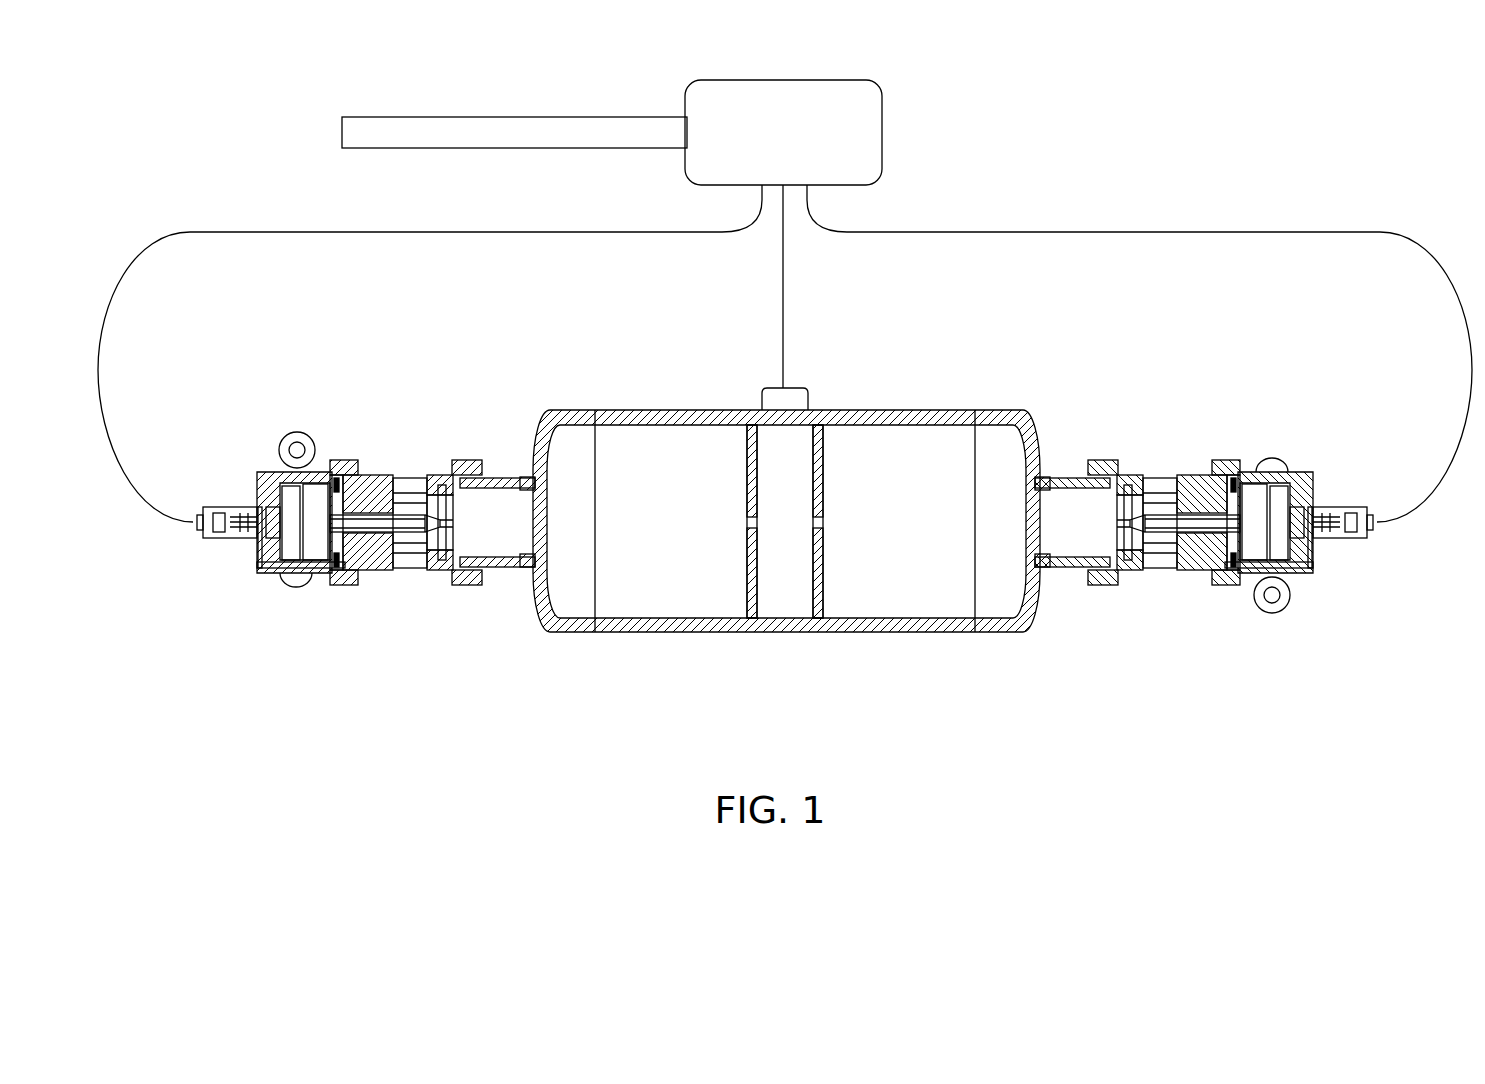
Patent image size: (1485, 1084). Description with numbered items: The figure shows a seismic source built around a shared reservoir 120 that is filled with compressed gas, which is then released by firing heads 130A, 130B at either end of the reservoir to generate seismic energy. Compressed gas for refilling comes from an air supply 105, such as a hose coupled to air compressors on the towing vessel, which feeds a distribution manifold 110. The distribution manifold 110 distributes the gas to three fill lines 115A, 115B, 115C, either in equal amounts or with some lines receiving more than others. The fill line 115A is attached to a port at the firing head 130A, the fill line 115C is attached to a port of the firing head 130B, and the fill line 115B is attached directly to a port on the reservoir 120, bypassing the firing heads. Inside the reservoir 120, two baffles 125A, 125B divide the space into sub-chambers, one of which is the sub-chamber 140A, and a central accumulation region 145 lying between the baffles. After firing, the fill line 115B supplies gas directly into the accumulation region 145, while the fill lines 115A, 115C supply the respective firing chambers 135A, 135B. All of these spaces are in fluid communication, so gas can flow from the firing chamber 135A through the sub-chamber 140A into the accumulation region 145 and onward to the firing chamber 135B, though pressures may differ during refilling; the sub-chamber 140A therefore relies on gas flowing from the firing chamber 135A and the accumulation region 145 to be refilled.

The air supply 105 is at (550, 117).
The distribution manifold 110 is at (766, 170).
The fill line 115A is at (262, 232).
The fill line 115B is at (783, 268).
The fill line 115C is at (1035, 232).
The shared reservoir 120 is at (952, 409).
The baffle 125A is at (747, 445).
The baffle 125B is at (823, 450).
The firing head 130A is at (366, 525).
The firing head 130B is at (1213, 522).
The firing chamber 135A is at (316, 545).
The firing chamber 135B is at (1278, 545).
The sub-chamber 140A is at (653, 570).
The accumulation region 145 is at (792, 560).